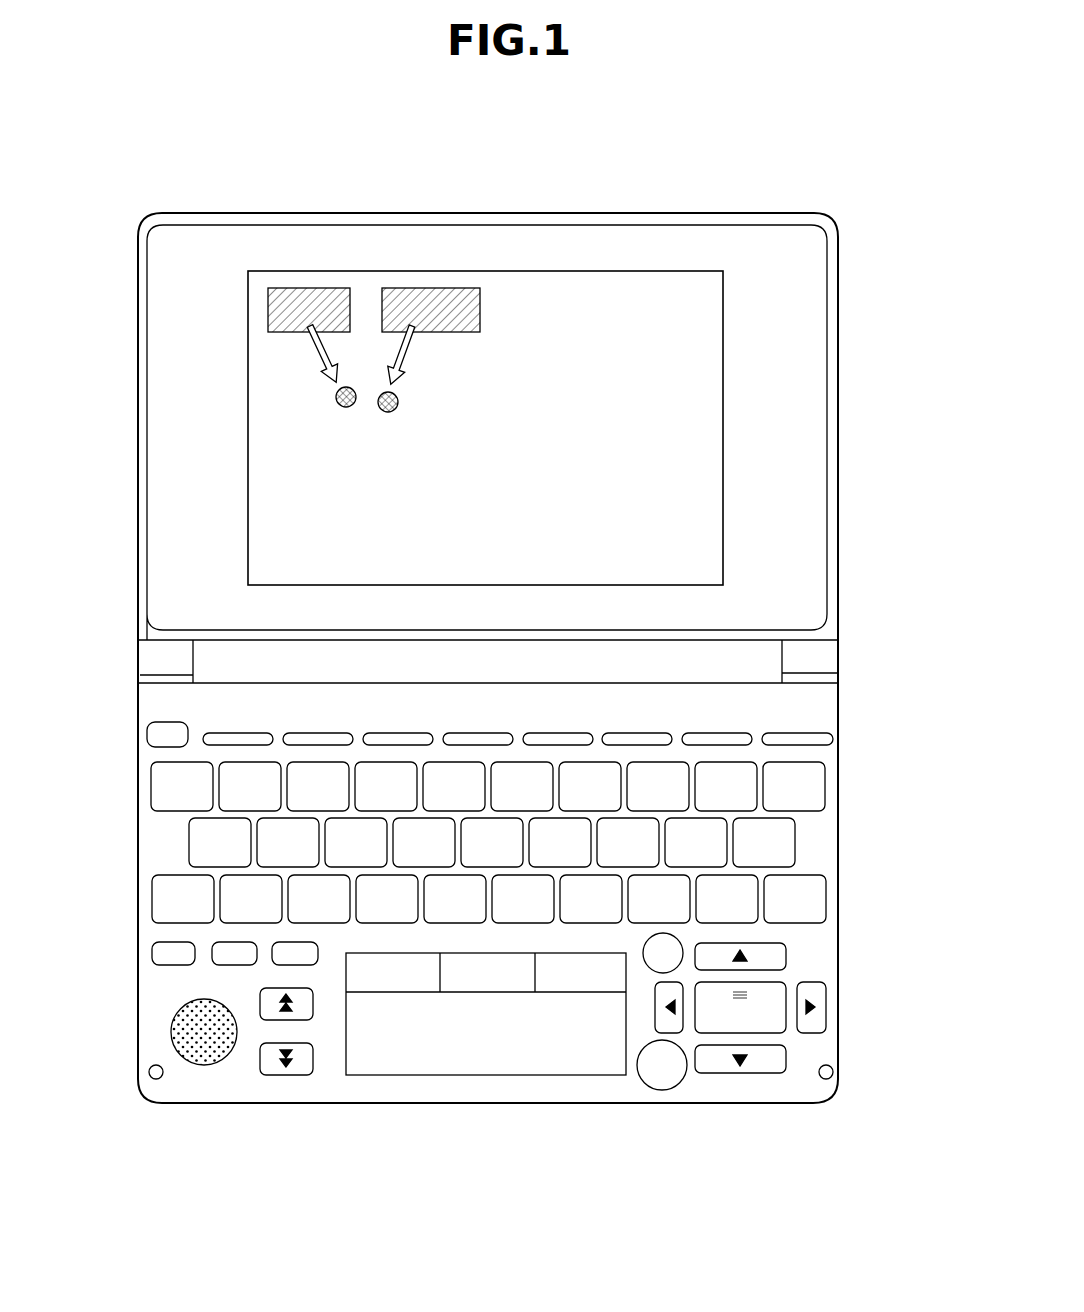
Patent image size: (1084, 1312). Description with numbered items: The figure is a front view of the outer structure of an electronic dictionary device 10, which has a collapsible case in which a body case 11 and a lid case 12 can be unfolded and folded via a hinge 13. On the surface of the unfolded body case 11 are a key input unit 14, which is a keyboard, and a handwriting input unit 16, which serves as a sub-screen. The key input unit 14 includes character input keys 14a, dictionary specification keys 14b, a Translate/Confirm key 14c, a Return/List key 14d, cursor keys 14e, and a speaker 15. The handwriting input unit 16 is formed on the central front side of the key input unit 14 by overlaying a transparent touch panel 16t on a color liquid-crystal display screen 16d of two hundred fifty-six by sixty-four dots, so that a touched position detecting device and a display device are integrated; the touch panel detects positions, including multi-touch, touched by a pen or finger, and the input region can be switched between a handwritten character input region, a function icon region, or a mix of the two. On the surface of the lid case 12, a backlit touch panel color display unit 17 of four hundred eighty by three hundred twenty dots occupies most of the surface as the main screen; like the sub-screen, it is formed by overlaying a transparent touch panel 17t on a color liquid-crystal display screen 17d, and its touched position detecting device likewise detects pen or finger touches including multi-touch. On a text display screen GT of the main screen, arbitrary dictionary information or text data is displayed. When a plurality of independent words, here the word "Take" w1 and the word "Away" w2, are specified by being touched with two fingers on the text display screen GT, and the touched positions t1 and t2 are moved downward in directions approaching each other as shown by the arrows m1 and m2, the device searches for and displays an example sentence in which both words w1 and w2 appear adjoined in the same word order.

The electronic dictionary device 10 is at (740, 186).
The body case 11 is at (152, 853).
The lid case 12 is at (158, 532).
The hinge 13 is at (150, 660).
The key input unit 14 is at (548, 898).
The character input keys 14a is at (843, 757).
The dictionary specification keys 14b is at (843, 684).
The Translate/Confirm key 14c is at (776, 990).
The Return/List key 14d is at (770, 1060).
The cursor keys 14e is at (820, 1010).
The speaker 15 is at (204, 1050).
The handwriting input unit 16 is at (486, 1084).
The color liquid-crystal display screen 16d is at (510, 1076).
The transparent touch panel 16t is at (558, 1076).
The touch panel color display unit 17 is at (485, 357).
The color liquid-crystal display screen 17d is at (497, 290).
The transparent touch panel 17t is at (547, 290).
The text display screen GT is at (640, 296).
The word "Take" w1 is at (304, 290).
The word "Away" w2 is at (418, 290).
The arrow m1 is at (326, 372).
The arrow m2 is at (381, 334).
The touched position t1 is at (340, 407).
The touched position t2 is at (384, 412).